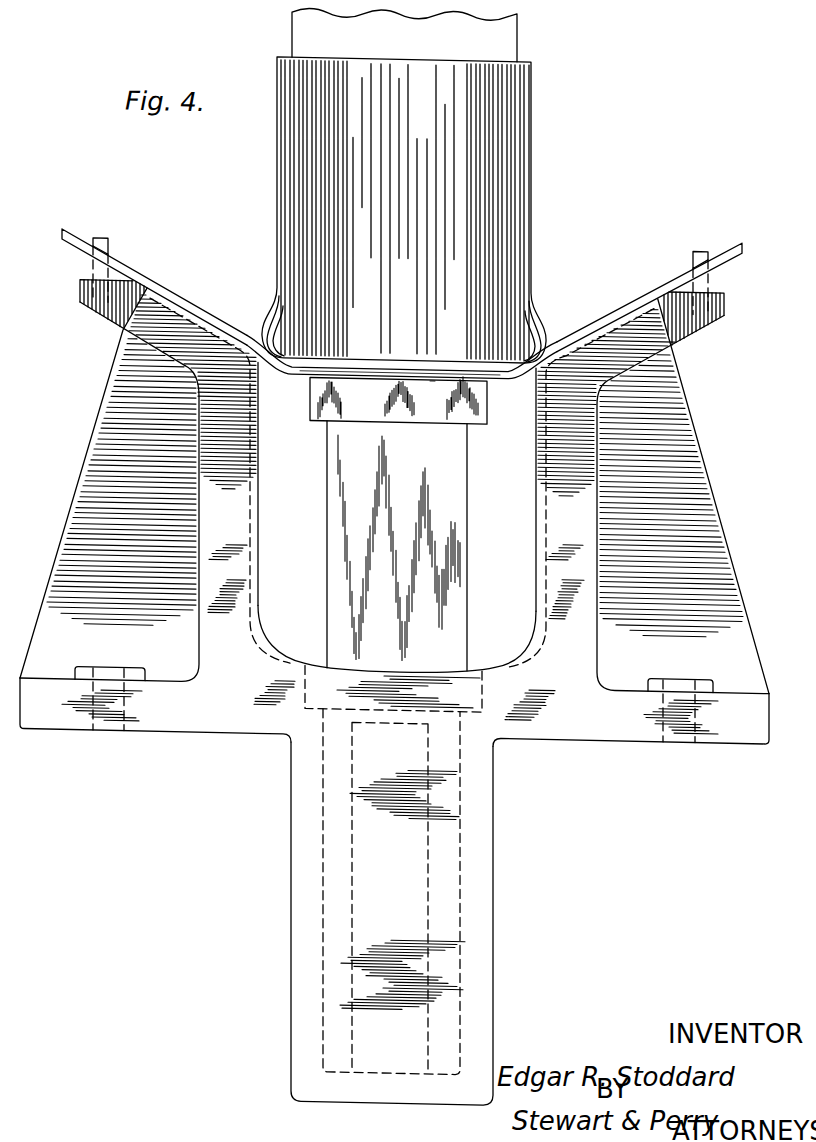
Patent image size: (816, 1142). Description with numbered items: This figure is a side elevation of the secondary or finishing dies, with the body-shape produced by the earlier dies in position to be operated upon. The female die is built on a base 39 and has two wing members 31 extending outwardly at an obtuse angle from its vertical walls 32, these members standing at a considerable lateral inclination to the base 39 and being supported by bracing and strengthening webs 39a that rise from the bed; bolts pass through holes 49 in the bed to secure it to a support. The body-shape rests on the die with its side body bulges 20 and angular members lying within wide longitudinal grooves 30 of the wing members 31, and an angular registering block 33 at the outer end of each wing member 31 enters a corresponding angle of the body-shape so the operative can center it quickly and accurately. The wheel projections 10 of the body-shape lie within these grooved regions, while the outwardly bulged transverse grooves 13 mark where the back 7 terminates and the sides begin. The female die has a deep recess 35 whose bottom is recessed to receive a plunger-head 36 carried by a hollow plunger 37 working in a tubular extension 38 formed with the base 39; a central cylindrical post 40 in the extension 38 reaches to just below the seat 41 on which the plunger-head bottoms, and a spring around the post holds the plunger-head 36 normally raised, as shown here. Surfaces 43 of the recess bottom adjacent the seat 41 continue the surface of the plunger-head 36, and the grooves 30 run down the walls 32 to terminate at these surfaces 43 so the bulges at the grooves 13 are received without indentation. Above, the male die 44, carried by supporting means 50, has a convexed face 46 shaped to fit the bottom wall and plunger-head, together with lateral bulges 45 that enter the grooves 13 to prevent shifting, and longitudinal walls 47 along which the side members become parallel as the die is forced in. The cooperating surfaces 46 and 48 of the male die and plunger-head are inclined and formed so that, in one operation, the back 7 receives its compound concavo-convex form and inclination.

The back 7 is at (386, 370).
The wheel projections 10 is at (128, 246).
The transverse grooves 13 is at (272, 369).
The side body bulges 20 is at (142, 280).
The longitudinal grooves 30 is at (221, 292).
The wing members 31 is at (106, 296).
The vertical walls 32 is at (228, 518).
The registering block 33 is at (100, 224).
The deep recess 35 is at (425, 546).
The plunger-head 36 is at (481, 415).
The hollow plunger 37 is at (348, 428).
The tubular extension 38 is at (494, 924).
The base 39 is at (592, 715).
The webs 39a is at (706, 380).
The central cylindrical post 40 is at (430, 888).
The seat 41 is at (318, 705).
The surfaces 43 is at (293, 650).
The male die 44 is at (520, 158).
The lateral bulges 45 is at (263, 314).
The convexed face 46 is at (296, 360).
The longitudinal walls 47 is at (276, 196).
The cooperating surface of plunger-head 48 is at (432, 375).
The holes 49 is at (92, 728).
The supporting means 50 is at (502, 30).